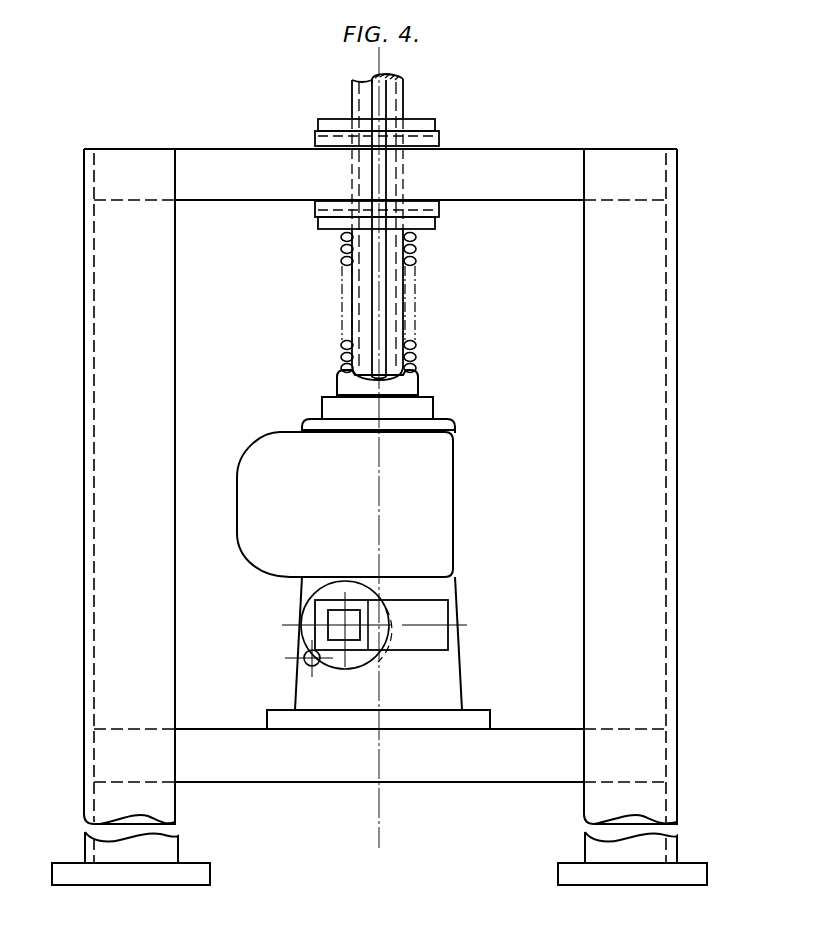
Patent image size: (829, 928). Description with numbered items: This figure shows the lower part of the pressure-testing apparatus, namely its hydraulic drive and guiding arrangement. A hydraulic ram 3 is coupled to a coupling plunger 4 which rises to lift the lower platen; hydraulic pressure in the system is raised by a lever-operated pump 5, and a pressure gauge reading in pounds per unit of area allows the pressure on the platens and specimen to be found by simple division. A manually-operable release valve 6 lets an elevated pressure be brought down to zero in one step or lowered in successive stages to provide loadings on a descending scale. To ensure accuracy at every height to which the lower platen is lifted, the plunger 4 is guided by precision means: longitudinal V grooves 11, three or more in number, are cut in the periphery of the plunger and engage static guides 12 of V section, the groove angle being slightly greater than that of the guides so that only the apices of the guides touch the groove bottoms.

The hydraulic ram 3 is at (416, 377).
The coupling plunger 4 is at (400, 306).
The lever-operated pump 5 is at (328, 597).
The manually-operable release valve 6 is at (305, 656).
The longitudinal V grooves 11 is at (401, 104).
The static guides 12 is at (412, 122).